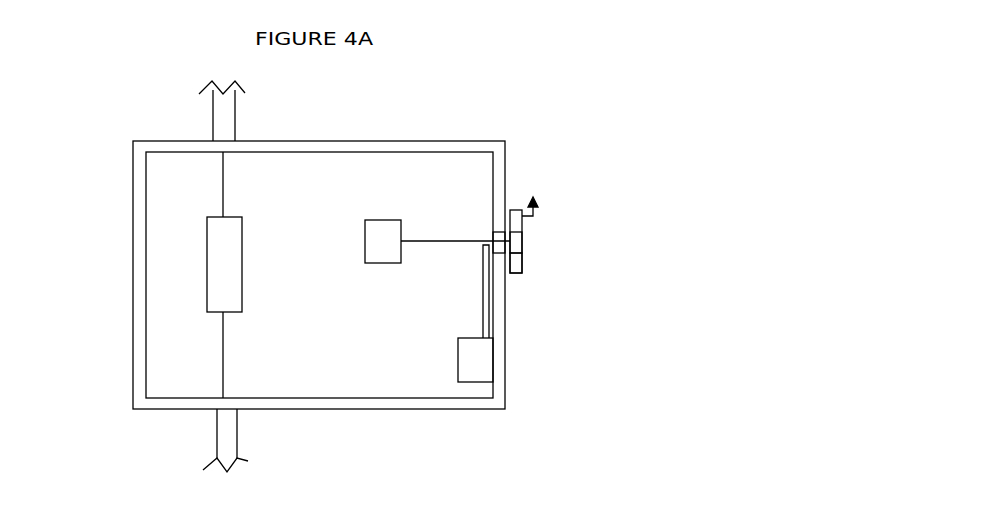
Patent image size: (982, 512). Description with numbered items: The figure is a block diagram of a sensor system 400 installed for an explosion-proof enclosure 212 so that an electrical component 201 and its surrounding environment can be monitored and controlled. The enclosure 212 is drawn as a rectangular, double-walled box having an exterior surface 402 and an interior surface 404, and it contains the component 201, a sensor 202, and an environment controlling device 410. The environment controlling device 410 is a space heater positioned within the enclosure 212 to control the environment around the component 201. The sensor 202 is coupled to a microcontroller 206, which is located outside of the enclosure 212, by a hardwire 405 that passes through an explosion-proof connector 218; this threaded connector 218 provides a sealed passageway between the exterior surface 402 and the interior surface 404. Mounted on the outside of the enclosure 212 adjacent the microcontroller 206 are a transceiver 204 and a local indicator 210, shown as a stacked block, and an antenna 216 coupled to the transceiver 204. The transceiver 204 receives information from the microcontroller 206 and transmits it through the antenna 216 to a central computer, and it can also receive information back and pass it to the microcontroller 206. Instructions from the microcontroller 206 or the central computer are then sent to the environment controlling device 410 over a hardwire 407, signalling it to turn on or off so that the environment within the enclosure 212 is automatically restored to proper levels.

The sensor system 400 is at (569, 89).
The exterior surface 402 is at (134, 212).
The interior surface 404 is at (146, 297).
The explosion-proof enclosure 212 is at (388, 406).
The electrical component 201 is at (228, 243).
The environment controlling device 410 is at (385, 233).
The hardwire 407 is at (445, 243).
The explosion-proof connector 218 is at (493, 233).
The hardwire 405 is at (483, 282).
The sensor 202 is at (470, 377).
The transceiver 204 is at (512, 212).
The microcontroller 206 is at (517, 243).
The local indicator 210 is at (517, 274).
The antenna 216 is at (534, 213).